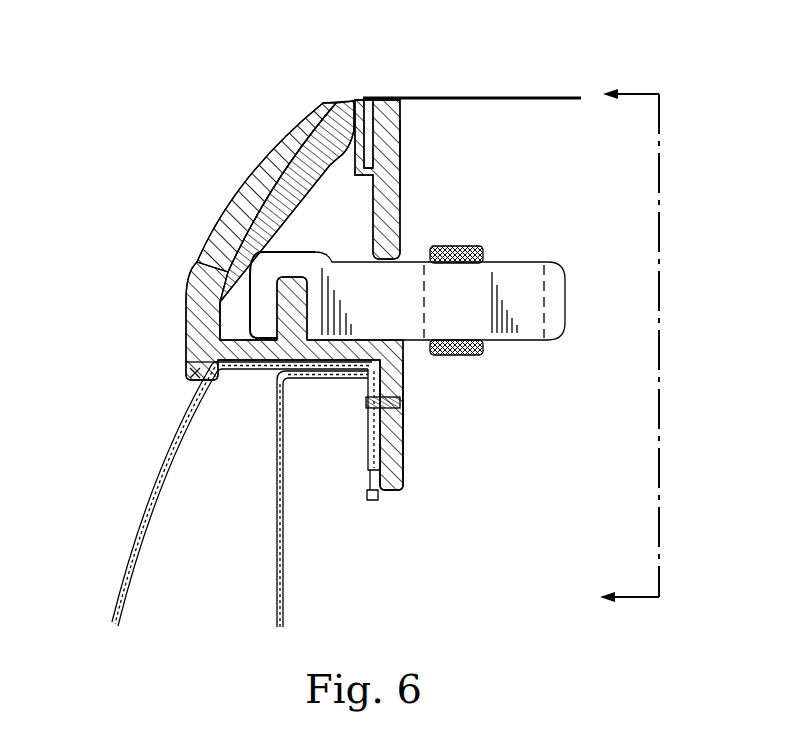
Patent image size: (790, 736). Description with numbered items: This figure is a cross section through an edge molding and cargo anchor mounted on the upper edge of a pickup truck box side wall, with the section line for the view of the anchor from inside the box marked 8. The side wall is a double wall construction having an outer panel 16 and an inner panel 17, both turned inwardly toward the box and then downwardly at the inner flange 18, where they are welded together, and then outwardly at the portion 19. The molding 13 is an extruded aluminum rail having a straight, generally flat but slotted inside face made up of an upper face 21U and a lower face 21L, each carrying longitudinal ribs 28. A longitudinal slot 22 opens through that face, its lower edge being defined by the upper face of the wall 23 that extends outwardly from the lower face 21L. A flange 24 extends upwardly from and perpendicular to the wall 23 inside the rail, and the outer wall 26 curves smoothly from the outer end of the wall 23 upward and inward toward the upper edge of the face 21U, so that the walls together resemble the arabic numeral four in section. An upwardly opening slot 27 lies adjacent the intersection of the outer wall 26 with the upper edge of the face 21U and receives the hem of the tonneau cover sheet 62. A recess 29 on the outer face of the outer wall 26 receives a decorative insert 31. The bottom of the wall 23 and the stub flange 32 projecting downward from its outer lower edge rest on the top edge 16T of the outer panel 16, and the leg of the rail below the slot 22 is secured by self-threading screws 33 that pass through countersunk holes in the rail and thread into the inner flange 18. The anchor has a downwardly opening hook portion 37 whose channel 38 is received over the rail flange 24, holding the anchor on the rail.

The molding 13 is at (256, 76).
The decorative insert 31 is at (287, 148).
The recess 29 is at (273, 173).
The outer wall 26 is at (260, 207).
The hook portion 37 is at (268, 278).
The slot 27 is at (357, 100).
The sheet 62 is at (470, 98).
The inside face (upper) 21U is at (447, 154).
The slot 22 is at (403, 257).
The wall 23 is at (375, 342).
The channel 38 is at (262, 287).
The flange 24 is at (290, 328).
The top edge 16T is at (187, 344).
The stub flange 32 is at (185, 368).
The outer panel 16 is at (147, 477).
The inner panel 17 is at (275, 580).
The inner flange 18 is at (402, 388).
The outwardly turned portion 19 is at (375, 493).
The screws 33 is at (402, 402).
The ribs 28 is at (400, 142).
The inside face (lower) 21L is at (402, 477).
The section line 8- 8 is at (652, 342).